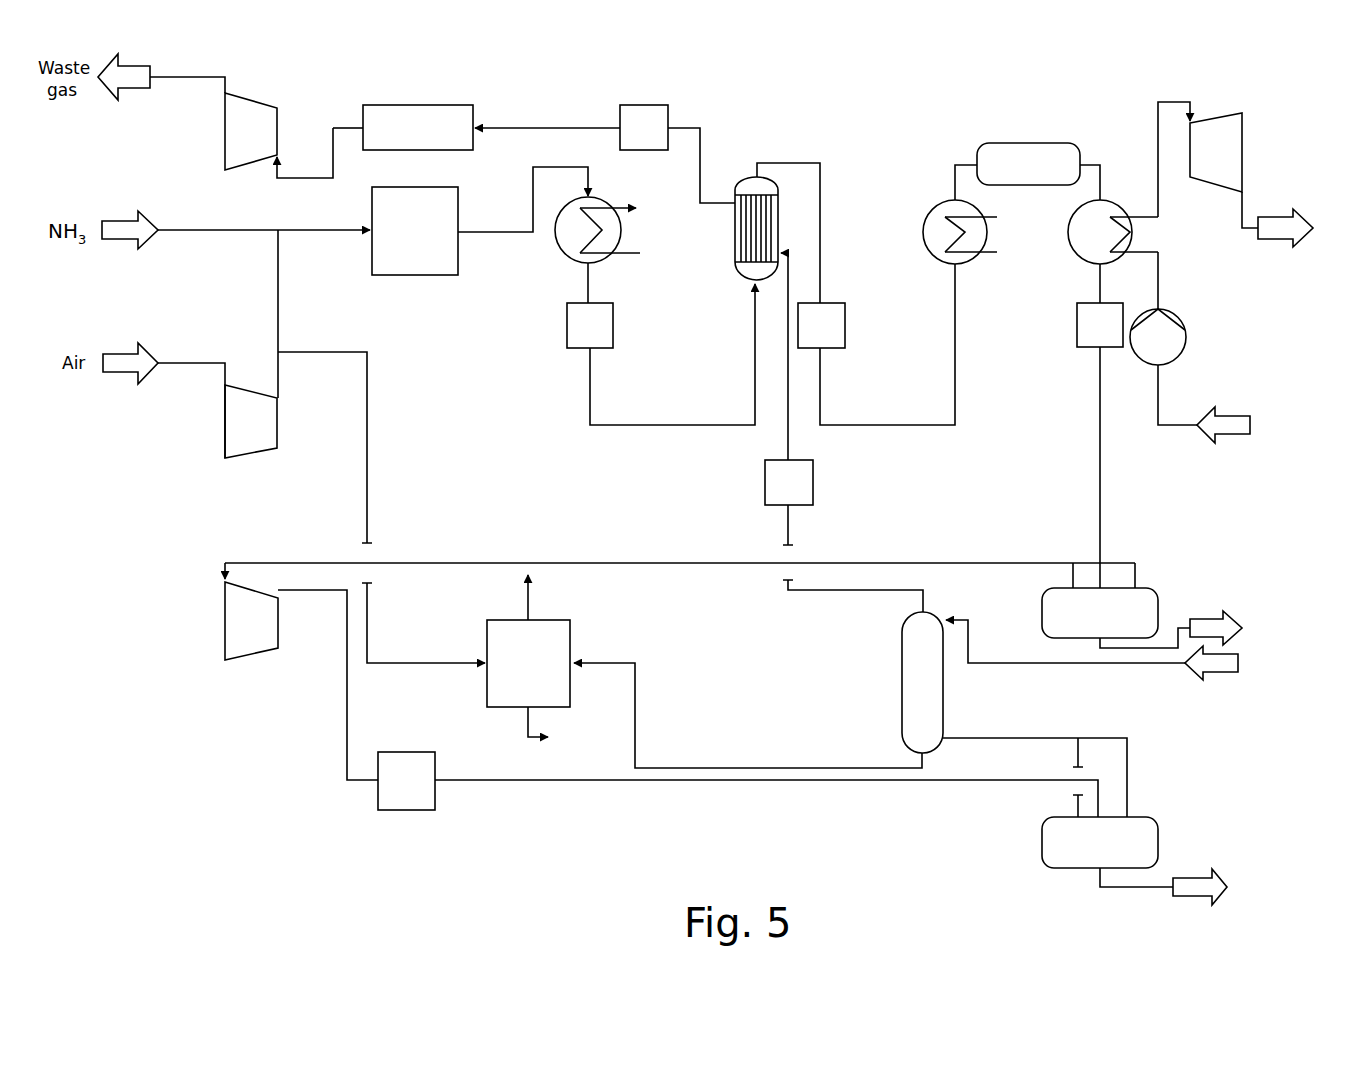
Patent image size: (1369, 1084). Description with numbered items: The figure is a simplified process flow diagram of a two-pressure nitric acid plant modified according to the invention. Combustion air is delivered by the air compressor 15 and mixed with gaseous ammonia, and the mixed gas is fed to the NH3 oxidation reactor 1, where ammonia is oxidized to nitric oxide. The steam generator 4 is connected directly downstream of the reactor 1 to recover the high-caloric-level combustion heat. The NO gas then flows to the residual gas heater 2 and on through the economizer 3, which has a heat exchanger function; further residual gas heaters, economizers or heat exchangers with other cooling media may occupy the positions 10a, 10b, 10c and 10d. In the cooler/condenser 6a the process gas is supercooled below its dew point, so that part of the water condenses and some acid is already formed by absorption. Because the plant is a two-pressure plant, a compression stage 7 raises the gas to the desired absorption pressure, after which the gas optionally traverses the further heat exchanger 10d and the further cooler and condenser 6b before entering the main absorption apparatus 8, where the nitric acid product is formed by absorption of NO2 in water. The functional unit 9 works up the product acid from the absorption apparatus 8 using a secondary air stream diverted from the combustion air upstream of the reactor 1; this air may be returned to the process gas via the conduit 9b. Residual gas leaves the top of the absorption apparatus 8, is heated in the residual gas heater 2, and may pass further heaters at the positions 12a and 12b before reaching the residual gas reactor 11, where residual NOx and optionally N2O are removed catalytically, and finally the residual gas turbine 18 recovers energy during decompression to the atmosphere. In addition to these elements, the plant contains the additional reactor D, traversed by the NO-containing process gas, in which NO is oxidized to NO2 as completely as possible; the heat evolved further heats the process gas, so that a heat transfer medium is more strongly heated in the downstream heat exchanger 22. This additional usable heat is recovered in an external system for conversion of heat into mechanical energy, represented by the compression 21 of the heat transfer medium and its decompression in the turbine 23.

The NH3 oxidation reactor 1 is at (480, 221).
The residual gas heater 2 is at (761, 311).
The economizer 3 is at (962, 216).
The steam generator 4 is at (625, 250).
The cooler/condenser 6a is at (1171, 605).
The further cooler and condenser 6b is at (1164, 861).
The compression stage 7 is at (301, 681).
The absorption apparatus 8 is at (928, 714).
The functional unit 9 is at (486, 668).
The conduit 9b is at (553, 597).
The heat exchanger position 10a is at (661, 354).
The heat exchanger position 10b is at (876, 344).
The heat exchanger position 10c is at (1100, 445).
The further heat exchanger 10d is at (738, 784).
The residual gas reactor 11 is at (476, 127).
The residual gas heat exchanger position 12a is at (844, 536).
The residual gas heat exchanger position 12b is at (677, 154).
The air compressor 15 is at (298, 447).
The residual gas turbine 18 is at (279, 135).
The compression of heat transfer medium 21 is at (1249, 386).
The heat exchanger 22 is at (1129, 202).
The turbine 23 is at (1251, 165).
The additional reactor D is at (1038, 158).